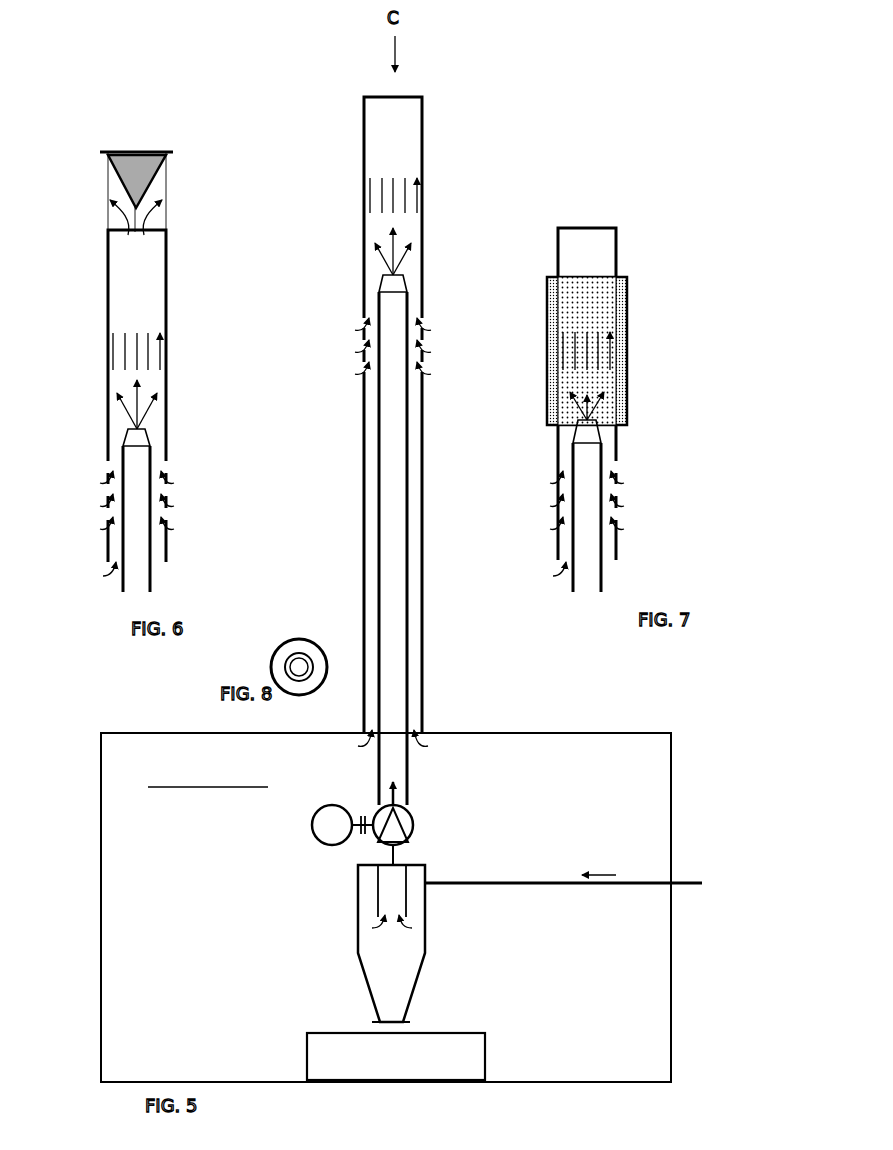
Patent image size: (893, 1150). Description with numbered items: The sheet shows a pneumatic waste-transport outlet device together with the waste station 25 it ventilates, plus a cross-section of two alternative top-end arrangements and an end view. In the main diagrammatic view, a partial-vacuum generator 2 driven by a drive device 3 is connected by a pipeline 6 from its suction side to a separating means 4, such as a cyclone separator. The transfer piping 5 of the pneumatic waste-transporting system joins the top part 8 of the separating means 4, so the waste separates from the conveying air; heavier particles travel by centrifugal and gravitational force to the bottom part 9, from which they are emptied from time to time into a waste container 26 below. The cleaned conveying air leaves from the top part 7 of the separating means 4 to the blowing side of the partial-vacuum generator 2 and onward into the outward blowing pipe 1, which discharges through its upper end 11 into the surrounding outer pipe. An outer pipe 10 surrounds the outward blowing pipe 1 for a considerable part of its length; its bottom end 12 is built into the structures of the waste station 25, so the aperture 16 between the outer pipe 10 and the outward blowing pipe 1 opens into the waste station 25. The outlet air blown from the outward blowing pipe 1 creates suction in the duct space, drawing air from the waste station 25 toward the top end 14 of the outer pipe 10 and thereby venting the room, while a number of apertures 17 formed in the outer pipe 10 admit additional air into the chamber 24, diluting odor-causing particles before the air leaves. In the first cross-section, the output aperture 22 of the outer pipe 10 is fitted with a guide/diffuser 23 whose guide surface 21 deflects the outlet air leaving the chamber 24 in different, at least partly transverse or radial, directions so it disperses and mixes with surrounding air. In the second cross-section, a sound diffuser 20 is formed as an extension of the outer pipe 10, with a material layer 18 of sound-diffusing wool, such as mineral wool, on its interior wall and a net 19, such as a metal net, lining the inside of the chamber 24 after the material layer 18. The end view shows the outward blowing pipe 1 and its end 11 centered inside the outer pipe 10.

In FIG. 5, the outward blowing pipe 1 is at (378, 518).
In FIG. 7, the outward blowing pipe 1 is at (572, 545).
In FIG. 8, the outward blowing pipe 1 is at (298, 654).
In FIG. 5, the partial-vacuum generator 2 is at (415, 826).
In FIG. 5, the drive device 3 is at (312, 830).
In FIG. 5, the separating means 4 is at (357, 888).
In FIG. 5, the transfer piping 5 is at (526, 883).
In FIG. 5, the pipeline 6 is at (398, 858).
In FIG. 5, the top part of the separating means 7 is at (378, 915).
In FIG. 5, the top part of the separating means 8 is at (430, 892).
In FIG. 5, the bottom part of the separating means 9 is at (378, 1018).
In FIG. 5, the outer pipe 10 is at (422, 487).
In FIG. 6, the outer pipe 10 is at (166, 375).
In FIG. 7, the outer pipe 10 is at (616, 455).
In FIG. 8, the outer pipe 10 is at (272, 662).
In FIG. 5, the nozzle 11 is at (385, 275).
In FIG. 6, the nozzle 11 is at (130, 432).
In FIG. 8, the nozzle 11 is at (306, 662).
In FIG. 5, the bottom end of the outer pipe 12 is at (422, 727).
In FIG. 6, the bottom end of the outer pipe 12 is at (166, 560).
In FIG. 7, the bottom end of the outer pipe 12 is at (616, 558).
In FIG. 5, the top end of the outer pipe 14 is at (422, 97).
In FIG. 7, the top end of the outer pipe 14 is at (616, 230).
In FIG. 5, the aperture 16 is at (364, 748).
In FIG. 6, the aperture 16 is at (105, 574).
In FIG. 7, the aperture 16 is at (555, 574).
In FIG. 5, the aperture 17 is at (392, 351).
In FIG. 6, the aperture 17 is at (134, 504).
In FIG. 7, the aperture 17 is at (585, 505).
In FIG. 7, the material layer 18 is at (627, 333).
In FIG. 7, the net 19 is at (610, 298).
In FIG. 7, the sound diffuser 20 is at (627, 412).
In FIG. 6, the guide surface 21 is at (152, 178).
In FIG. 5, the output aperture 22 is at (382, 98).
In FIG. 6, the output aperture 22 is at (112, 226).
In FIG. 7, the output aperture 22 is at (570, 232).
In FIG. 6, the guide/diffuser 23 is at (140, 152).
In FIG. 5, the chamber 24 is at (386, 157).
In FIG. 6, the chamber 24 is at (129, 308).
In FIG. 7, the chamber 24 is at (583, 271).
In FIG. 5, the waste station 25 is at (146, 836).
In FIG. 5, the waste container 26 is at (315, 1052).